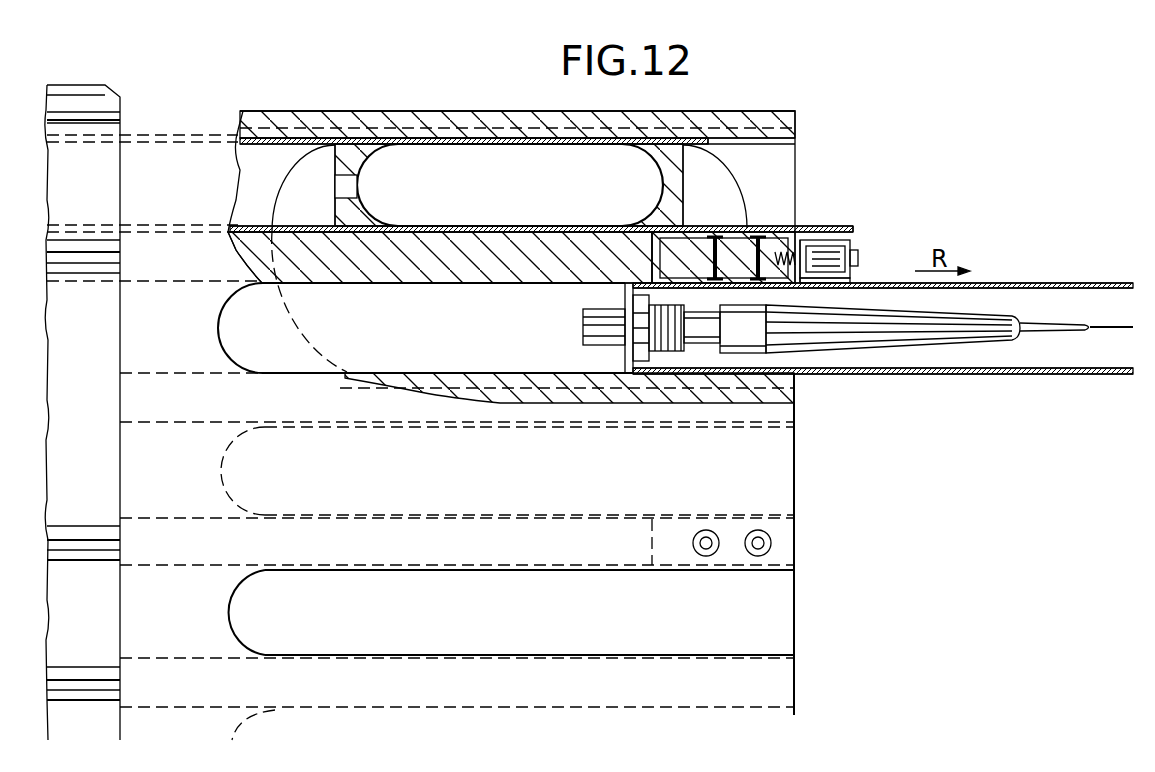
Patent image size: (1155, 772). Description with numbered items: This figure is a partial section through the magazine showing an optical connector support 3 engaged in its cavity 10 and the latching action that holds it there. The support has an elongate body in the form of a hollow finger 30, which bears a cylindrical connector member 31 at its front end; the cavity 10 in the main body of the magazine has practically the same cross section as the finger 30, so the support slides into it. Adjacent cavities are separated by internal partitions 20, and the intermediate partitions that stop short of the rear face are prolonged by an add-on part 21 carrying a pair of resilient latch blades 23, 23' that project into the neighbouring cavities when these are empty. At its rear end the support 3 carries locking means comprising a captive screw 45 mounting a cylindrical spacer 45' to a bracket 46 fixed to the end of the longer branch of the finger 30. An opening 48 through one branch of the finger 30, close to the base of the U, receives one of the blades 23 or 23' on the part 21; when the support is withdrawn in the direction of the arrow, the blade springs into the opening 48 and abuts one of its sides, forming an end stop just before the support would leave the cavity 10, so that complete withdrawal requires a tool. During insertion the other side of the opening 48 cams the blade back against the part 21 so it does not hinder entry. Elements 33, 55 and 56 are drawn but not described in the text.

The optical connector support 3 is at (805, 229).
The cavity 10 is at (387, 342).
The internal partition 20 is at (458, 268).
The add-on part 21 is at (742, 232).
The resilient latch blade 23 is at (496, 205).
The resilient latch blade 23' is at (676, 206).
The hollow finger 30 is at (990, 282).
The connector member 31 is at (585, 330).
The plate 33 is at (622, 300).
The captive screw 45 is at (869, 245).
The cylindrical spacer 45' is at (861, 229).
The bracket 46 is at (822, 288).
The opening 48 is at (675, 284).
The wire 55 is at (1108, 330).
The nozzle 56 is at (867, 325).